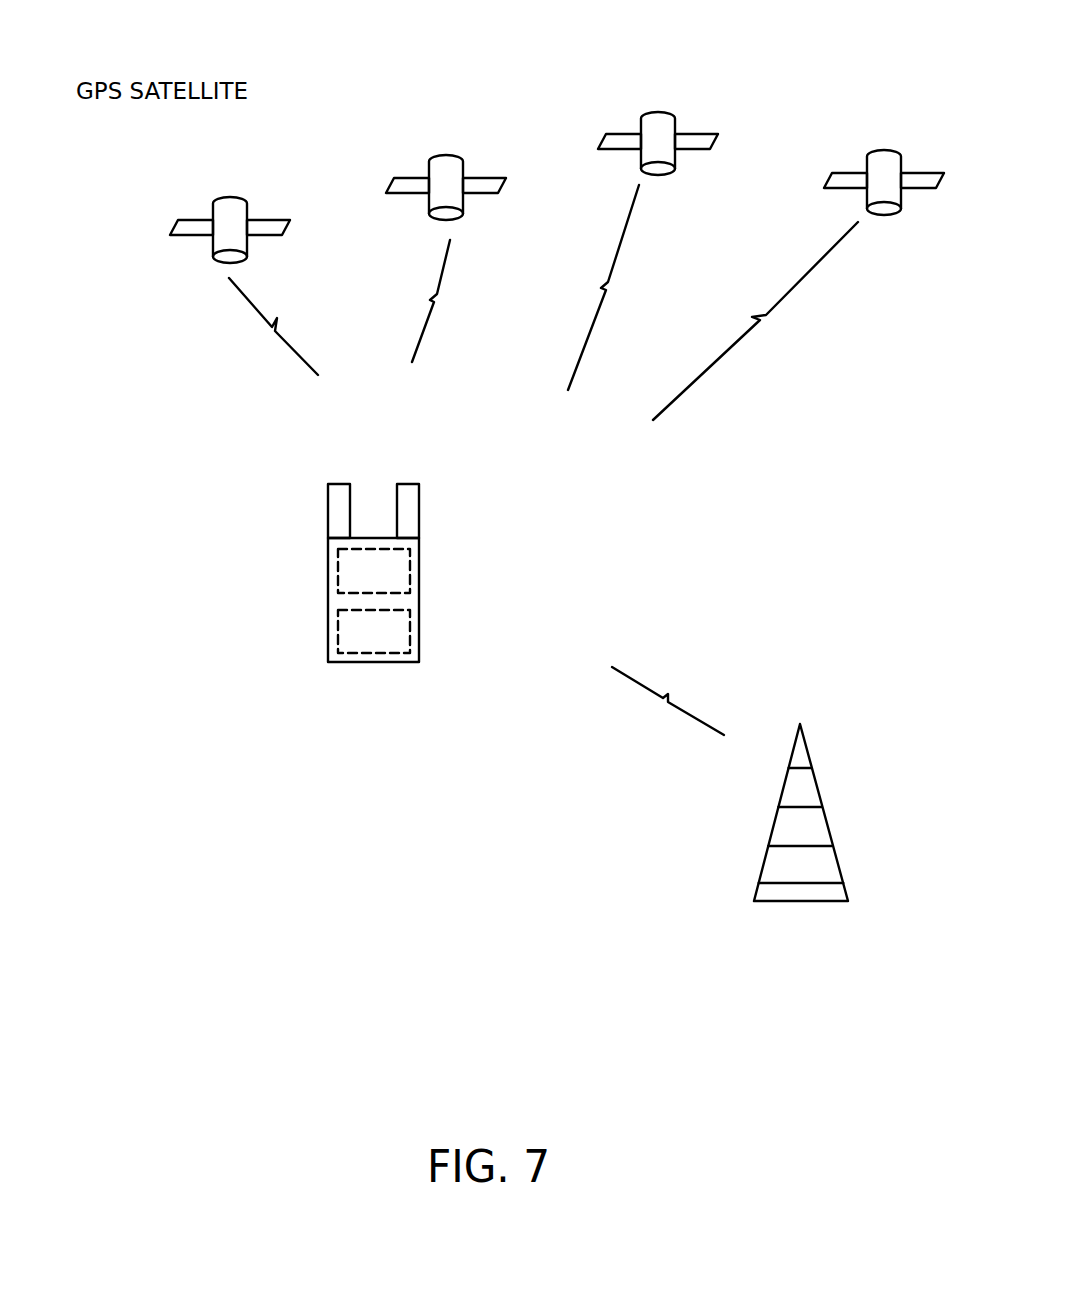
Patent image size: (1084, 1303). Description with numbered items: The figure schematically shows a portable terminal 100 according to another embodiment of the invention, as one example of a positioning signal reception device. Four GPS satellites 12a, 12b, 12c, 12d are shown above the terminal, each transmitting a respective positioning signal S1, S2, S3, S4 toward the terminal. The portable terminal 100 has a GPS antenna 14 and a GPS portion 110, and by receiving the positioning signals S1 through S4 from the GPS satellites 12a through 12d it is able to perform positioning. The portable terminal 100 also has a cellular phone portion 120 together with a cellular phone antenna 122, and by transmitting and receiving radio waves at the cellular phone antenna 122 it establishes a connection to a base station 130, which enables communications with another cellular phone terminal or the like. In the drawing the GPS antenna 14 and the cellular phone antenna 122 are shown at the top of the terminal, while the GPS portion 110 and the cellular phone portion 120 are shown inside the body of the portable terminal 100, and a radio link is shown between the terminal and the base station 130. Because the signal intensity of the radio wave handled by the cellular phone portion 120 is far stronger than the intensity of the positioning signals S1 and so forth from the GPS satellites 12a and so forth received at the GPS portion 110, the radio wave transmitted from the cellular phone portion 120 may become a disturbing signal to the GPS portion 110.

The GPS satellite 12a is at (229, 197).
The GPS satellite 12b is at (446, 155).
The GPS satellite 12c is at (658, 112).
The GPS satellite 12d is at (884, 150).
The positioning signal S1 is at (244, 300).
The positioning signal S2 is at (443, 263).
The positioning signal S3 is at (620, 235).
The positioning signal S4 is at (807, 262).
The GPS antenna 14 is at (328, 495).
The GPS portion 110 is at (338, 553).
The cellular phone portion 120 is at (338, 633).
The cellular phone antenna 122 is at (419, 507).
The portable terminal 100 is at (443, 602).
The base station 130 is at (765, 860).